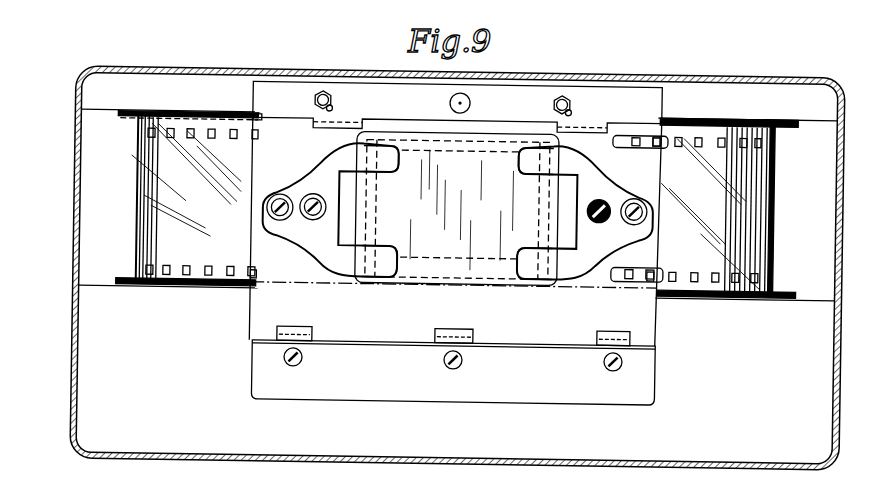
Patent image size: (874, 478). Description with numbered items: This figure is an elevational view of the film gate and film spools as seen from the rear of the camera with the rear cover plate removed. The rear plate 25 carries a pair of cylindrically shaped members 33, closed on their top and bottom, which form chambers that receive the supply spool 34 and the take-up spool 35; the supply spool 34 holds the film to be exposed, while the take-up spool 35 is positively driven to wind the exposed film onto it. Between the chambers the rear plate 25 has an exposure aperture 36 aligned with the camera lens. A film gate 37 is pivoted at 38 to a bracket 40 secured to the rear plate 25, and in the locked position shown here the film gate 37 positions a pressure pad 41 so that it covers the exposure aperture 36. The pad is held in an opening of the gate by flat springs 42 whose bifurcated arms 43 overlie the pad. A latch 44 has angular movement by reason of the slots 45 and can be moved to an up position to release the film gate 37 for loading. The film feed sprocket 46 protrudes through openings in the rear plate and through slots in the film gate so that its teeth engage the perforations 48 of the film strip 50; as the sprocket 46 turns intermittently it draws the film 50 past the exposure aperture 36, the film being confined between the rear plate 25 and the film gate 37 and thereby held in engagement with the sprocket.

The rear plate 25 is at (457, 268).
The cylindrically shaped members 33 is at (98, 160).
The supply spool 34 is at (133, 115).
The take-up spool 35 is at (787, 292).
The exposure aperture 36 is at (446, 259).
The film gate 37 is at (258, 179).
The pivot 38 is at (302, 329).
The bracket 40 is at (345, 397).
The pressure pad 41 is at (470, 160).
The flat springs 42 is at (316, 240).
The bifurcated arms 43 is at (393, 170).
The latch 44 is at (700, 105).
The slots 45 is at (332, 108).
The film feed sprocket 46 is at (638, 140).
The perforations 48 is at (748, 130).
The film strip 50 is at (713, 202).